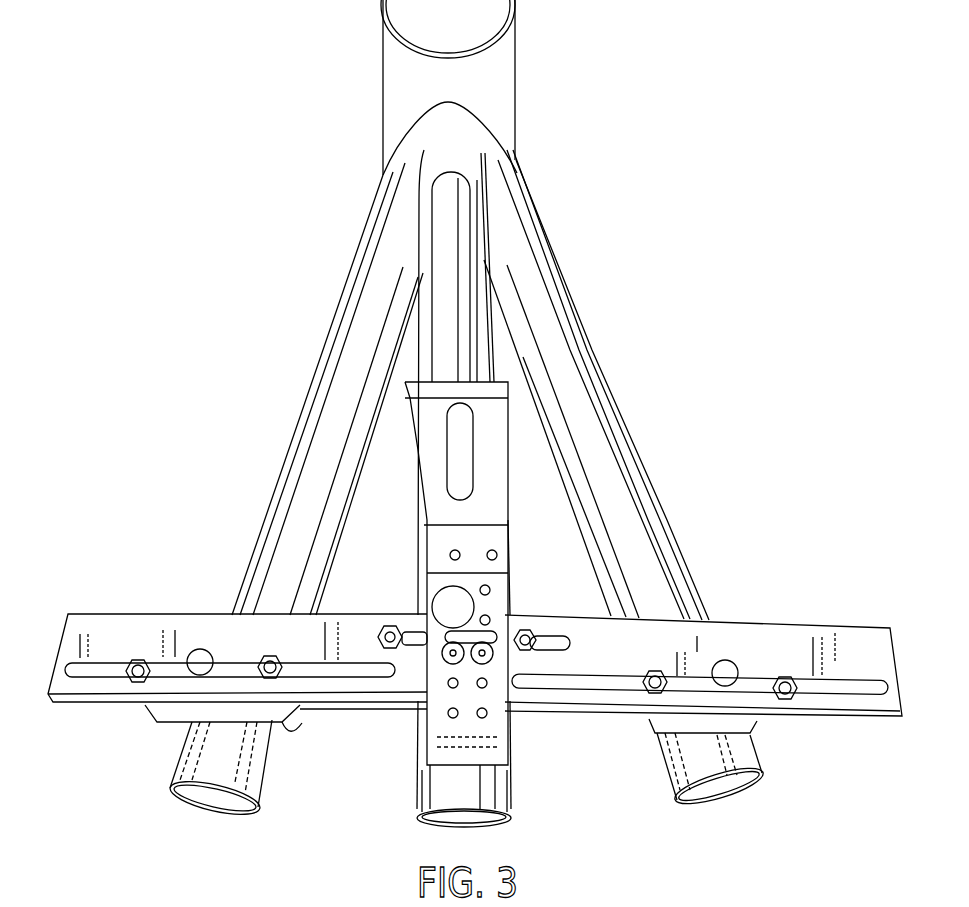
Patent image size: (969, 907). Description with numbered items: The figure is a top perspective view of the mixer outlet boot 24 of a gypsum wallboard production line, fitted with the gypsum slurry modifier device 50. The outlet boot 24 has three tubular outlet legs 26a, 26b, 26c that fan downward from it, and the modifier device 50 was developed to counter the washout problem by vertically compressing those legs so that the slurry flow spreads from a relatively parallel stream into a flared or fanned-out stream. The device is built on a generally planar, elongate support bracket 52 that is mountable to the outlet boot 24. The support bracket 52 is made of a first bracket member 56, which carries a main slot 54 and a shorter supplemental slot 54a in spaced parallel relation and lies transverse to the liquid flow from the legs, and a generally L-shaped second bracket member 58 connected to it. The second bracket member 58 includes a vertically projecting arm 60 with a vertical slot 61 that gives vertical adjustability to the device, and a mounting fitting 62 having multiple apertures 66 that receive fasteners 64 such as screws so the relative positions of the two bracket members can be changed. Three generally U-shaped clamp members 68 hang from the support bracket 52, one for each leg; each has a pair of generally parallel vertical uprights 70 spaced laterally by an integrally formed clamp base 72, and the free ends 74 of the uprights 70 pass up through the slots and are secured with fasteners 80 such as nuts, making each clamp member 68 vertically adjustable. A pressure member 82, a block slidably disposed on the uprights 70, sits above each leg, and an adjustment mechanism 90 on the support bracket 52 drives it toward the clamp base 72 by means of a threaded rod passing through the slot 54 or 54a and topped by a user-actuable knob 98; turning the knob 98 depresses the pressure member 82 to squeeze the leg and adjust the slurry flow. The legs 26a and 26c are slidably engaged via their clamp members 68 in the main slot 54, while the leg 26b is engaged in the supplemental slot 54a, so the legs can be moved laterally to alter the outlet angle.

The outlet boot 24 is at (392, 98).
The outlet leg 26a is at (310, 388).
The outlet leg 26b is at (470, 258).
The outlet leg 26c is at (570, 337).
The gypsum slurry modifier device 50 is at (818, 599).
The support bracket 52 is at (56, 696).
The main slot 54 is at (867, 698).
The supplemental slot 54a is at (551, 645).
The first bracket member 56 is at (147, 627).
The second bracket member 58 is at (500, 490).
The vertically projecting arm 60 is at (418, 407).
The vertical slot 61 is at (478, 457).
The mounting fitting 62 is at (450, 557).
The fasteners 64 is at (497, 554).
The apertures 66 is at (455, 719).
The clamp member 68 is at (126, 716).
The vertical uprights 70 is at (184, 732).
The clamp base 72 is at (652, 750).
The free ends 74 is at (131, 662).
The fasteners 80 is at (277, 661).
The pressure member 82 is at (294, 723).
The adjustment mechanism 90 is at (210, 618).
The user-actuable knob 98 is at (247, 574).